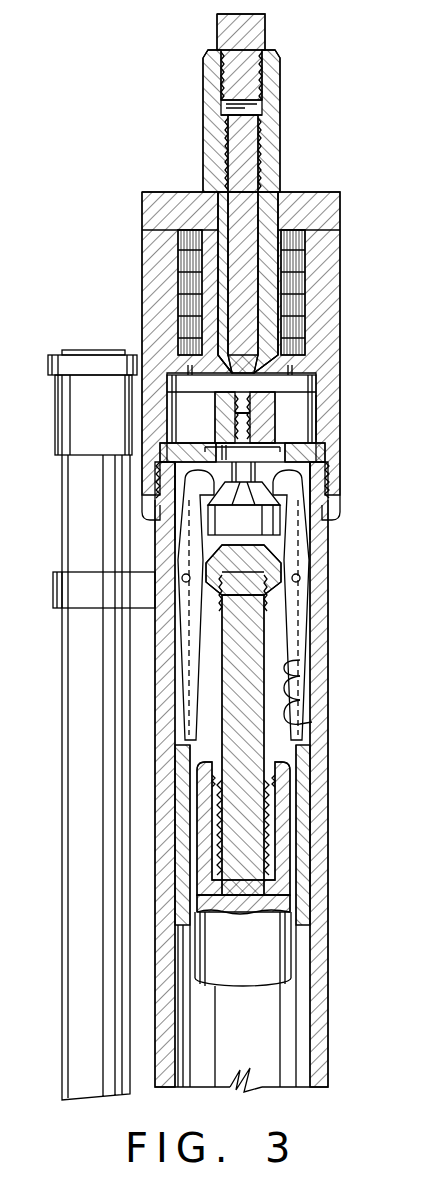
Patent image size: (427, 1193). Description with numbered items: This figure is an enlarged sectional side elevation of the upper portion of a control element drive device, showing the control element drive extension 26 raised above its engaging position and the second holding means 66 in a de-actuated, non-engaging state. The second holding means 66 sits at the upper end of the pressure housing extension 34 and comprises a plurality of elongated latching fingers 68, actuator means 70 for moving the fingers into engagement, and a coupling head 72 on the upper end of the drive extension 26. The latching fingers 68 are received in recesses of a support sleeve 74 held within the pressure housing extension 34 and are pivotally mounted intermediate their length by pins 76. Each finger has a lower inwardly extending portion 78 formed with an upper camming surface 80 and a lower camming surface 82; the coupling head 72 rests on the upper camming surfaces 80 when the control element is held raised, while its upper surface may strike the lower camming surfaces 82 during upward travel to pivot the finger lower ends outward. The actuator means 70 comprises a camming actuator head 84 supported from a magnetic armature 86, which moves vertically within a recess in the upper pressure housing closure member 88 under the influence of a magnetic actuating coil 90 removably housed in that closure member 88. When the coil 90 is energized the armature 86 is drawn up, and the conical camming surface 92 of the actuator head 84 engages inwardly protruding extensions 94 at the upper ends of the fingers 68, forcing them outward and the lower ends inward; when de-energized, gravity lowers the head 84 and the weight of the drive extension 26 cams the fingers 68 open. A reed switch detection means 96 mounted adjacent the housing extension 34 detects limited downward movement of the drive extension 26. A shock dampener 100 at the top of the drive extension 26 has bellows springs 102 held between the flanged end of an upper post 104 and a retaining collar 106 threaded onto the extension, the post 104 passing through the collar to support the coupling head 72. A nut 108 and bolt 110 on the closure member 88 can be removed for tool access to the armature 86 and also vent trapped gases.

The control element drive extension 26 is at (286, 962).
The pressure housing extension 34 is at (328, 645).
The second holding means 66 is at (314, 604).
The latching fingers 68 is at (302, 555).
The actuator means 70 is at (324, 427).
The coupling head 72 is at (215, 565).
The support sleeve 74 is at (312, 748).
The pins 76 is at (300, 578).
The lower inwardly extending portion 78 is at (295, 690).
The upper camming surface 80 is at (300, 668).
The lower camming surface 82 is at (296, 718).
The camming actuator head 84 is at (283, 528).
The magnetic armature 86 is at (320, 410).
The upper pressure housing closure member 88 is at (142, 270).
The magnetic actuating coil 90 is at (298, 280).
The conical camming surface 92 is at (306, 489).
The inwardly protruding extensions 94 is at (318, 453).
The detection means 96 is at (62, 722).
The shock dampener 100 is at (278, 800).
The bellows springs 102 is at (283, 850).
The upper post 104 is at (278, 820).
The retaining collar 106 is at (200, 762).
The nut 108 is at (266, 30).
The bolt 110 is at (258, 182).